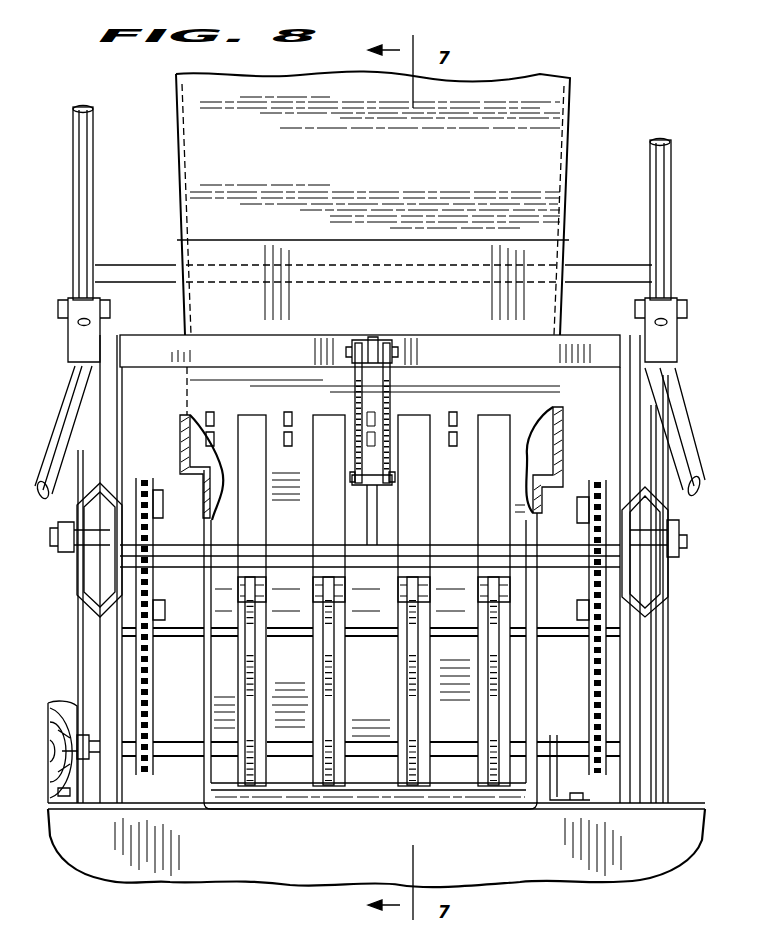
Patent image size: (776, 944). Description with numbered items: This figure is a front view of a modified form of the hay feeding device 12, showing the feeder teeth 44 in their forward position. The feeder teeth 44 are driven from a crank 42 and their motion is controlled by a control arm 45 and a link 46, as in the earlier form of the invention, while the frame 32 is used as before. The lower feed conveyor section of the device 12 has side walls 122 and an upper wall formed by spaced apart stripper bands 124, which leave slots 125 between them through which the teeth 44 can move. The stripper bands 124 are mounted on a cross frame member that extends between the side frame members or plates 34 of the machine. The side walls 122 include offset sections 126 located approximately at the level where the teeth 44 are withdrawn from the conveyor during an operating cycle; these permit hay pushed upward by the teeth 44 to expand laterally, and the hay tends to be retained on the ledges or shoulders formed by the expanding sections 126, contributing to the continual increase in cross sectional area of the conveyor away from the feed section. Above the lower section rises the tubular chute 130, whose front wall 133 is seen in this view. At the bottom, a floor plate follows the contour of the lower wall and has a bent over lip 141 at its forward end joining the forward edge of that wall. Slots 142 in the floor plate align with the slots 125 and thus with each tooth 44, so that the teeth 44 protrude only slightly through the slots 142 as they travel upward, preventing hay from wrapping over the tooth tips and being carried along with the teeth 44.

The frame cross bar 12 is at (408, 555).
The frame 32 is at (212, 332).
The side frame members 34 is at (632, 502).
The crank 42 is at (162, 606).
The feeder teeth 44 is at (490, 787).
The control arm 45 is at (368, 520).
The link 46 is at (392, 392).
The side walls 122 is at (537, 710).
The stripper bands 124 is at (273, 418).
The slots 125 is at (493, 448).
The offset sections 126 is at (185, 485).
The chute 130 is at (183, 130).
The front wall 133 is at (512, 90).
The bent over lip 141 is at (275, 800).
The slots 142 is at (345, 718).